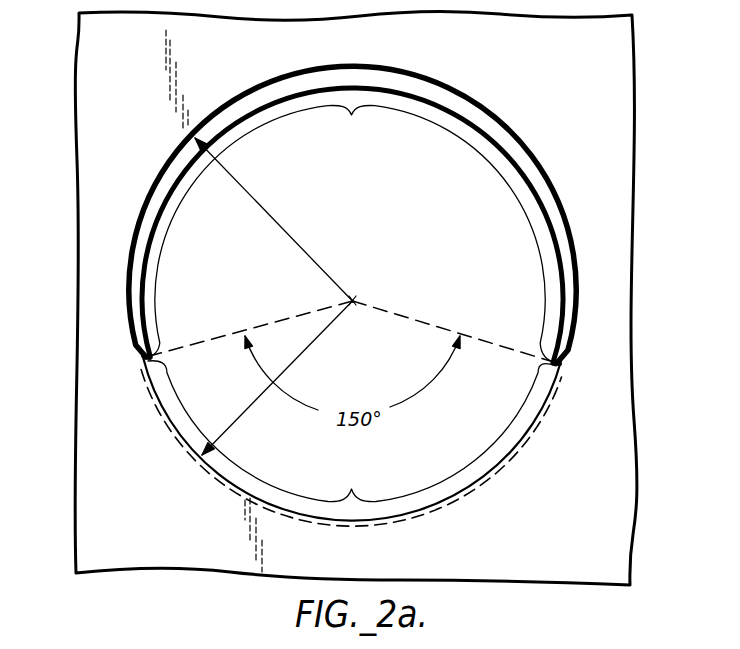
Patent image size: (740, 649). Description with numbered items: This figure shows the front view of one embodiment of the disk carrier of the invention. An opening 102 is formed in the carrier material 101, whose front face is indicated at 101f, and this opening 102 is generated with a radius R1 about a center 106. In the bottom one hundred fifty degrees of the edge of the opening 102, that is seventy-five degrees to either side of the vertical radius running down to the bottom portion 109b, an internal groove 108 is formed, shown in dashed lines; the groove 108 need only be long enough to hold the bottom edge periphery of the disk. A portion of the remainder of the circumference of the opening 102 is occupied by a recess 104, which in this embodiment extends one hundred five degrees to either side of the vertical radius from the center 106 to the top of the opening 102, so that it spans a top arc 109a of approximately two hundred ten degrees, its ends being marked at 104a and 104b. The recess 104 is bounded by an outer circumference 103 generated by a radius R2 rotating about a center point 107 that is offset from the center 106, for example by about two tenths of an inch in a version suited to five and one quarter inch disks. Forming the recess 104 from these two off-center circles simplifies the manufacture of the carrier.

The carrier material 101 is at (325, 298).
The face of plate 101f is at (104, 70).
The opening 102 is at (458, 498).
The outer circumference 103 is at (455, 90).
The recess 104 is at (483, 126).
The left end of ring 104a is at (146, 357).
The right end of ring 104b is at (557, 363).
The center 106 is at (357, 302).
The center point 107 is at (354, 299).
The internal groove 108 is at (488, 479).
The top arc 109a is at (351, 234).
The bottom portion 109b is at (352, 431).
The radius R1 is at (307, 350).
The radius R2 is at (262, 205).